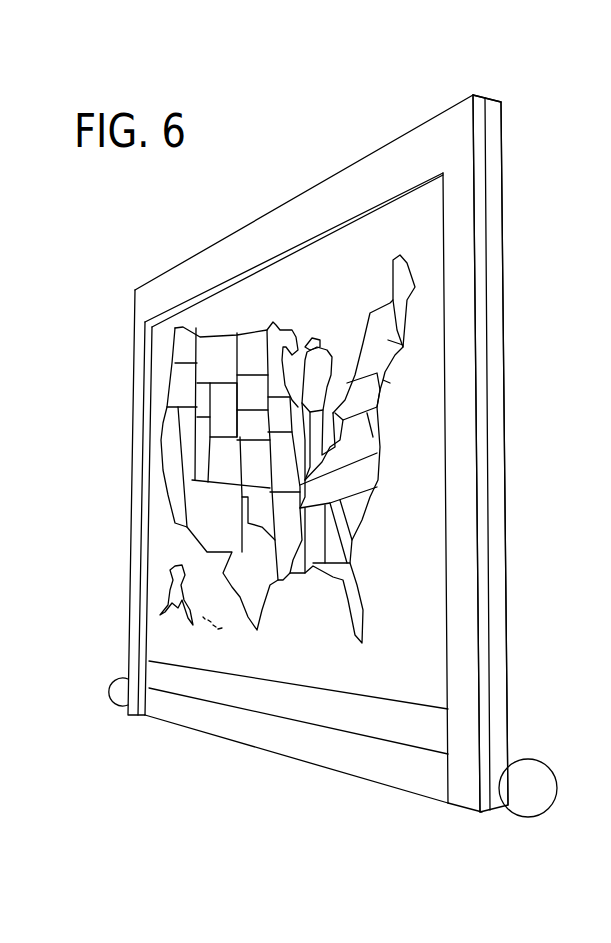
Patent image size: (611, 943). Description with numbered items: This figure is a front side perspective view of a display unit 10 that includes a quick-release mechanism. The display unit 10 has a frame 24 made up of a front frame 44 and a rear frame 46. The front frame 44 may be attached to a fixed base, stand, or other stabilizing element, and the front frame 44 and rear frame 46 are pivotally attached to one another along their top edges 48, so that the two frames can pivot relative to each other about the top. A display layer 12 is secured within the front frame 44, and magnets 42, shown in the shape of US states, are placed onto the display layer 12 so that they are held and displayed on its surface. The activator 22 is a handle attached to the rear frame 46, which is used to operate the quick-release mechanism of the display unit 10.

The display unit 10 is at (312, 122).
The display layer 12 is at (412, 587).
The activator 22 is at (537, 780).
The frame 24 is at (483, 420).
The magnets 42 is at (255, 578).
The front frame 44 is at (390, 167).
The rear frame 46 is at (493, 117).
The top edges 48 is at (253, 223).